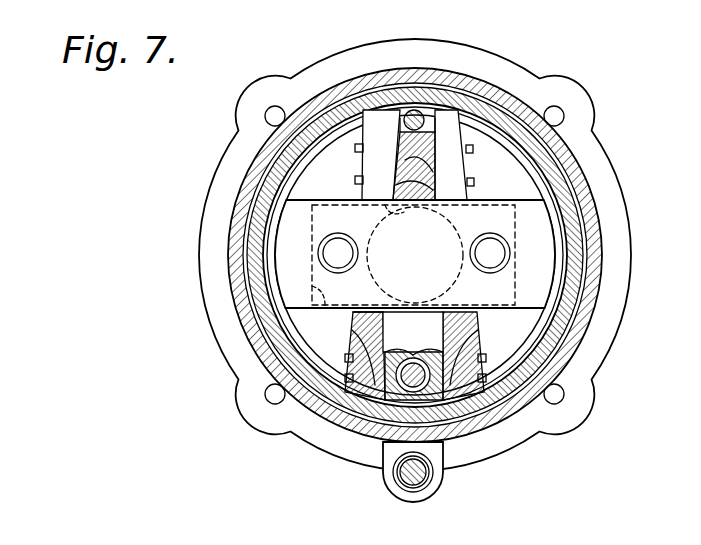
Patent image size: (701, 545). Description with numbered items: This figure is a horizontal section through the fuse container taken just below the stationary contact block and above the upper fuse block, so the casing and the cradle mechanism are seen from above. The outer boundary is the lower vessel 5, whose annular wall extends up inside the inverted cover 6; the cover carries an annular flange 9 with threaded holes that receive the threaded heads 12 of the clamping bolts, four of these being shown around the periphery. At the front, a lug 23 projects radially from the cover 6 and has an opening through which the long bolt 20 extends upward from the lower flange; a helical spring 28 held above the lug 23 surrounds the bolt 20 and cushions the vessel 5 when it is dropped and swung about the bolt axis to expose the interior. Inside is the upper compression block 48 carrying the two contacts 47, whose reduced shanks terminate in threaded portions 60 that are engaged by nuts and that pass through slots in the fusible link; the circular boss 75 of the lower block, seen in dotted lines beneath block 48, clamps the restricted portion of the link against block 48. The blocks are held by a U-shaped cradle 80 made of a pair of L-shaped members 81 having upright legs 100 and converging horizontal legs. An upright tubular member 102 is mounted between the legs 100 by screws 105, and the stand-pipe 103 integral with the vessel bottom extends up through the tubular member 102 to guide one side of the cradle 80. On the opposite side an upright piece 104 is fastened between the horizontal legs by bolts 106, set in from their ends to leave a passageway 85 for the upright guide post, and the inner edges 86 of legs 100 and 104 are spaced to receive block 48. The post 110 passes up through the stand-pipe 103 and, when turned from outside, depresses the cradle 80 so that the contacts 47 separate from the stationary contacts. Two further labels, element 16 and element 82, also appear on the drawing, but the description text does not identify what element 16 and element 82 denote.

The vessel 5 is at (572, 221).
The cover 6 is at (578, 166).
The annular flange 9 is at (592, 350).
The threaded heads 12 is at (270, 116).
The shaft 16 is at (414, 322).
The bolt 20 is at (417, 478).
The lug 23 is at (392, 450).
The helical spring 28 is at (398, 484).
The contacts 47 is at (326, 254).
The upper compression block 48 is at (300, 208).
The threaded portions 60 is at (352, 324).
The circular boss 75 is at (413, 255).
The U-shaped cradle 80 is at (357, 130).
The L-shaped members 81 is at (474, 182).
The left guide bar 82 is at (362, 155).
The passageway 85 is at (414, 110).
The inner edges 86 is at (428, 108).
The upright legs 100 is at (367, 336).
The tubular member 102 is at (414, 366).
The stand-pipe 103 is at (418, 348).
The upright piece 104 is at (432, 150).
The screws 105 is at (481, 372).
The bolts 106 is at (473, 150).
The post 110 is at (401, 373).